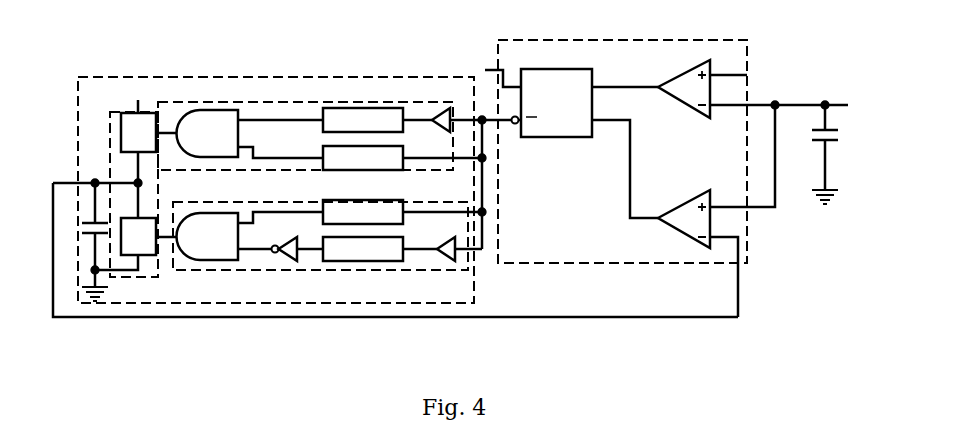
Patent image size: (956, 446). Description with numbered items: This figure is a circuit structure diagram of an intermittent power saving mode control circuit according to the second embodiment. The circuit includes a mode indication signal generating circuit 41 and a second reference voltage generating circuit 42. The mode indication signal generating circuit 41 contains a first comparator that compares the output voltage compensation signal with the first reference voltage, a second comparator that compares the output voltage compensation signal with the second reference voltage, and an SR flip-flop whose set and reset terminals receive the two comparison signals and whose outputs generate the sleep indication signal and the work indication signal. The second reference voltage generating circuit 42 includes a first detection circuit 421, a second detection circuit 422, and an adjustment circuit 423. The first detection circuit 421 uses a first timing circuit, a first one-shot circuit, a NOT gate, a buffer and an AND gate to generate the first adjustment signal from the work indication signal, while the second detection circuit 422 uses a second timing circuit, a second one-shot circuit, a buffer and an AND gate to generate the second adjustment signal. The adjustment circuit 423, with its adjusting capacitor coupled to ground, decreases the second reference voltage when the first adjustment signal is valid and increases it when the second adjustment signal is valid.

The mode indication signal generating circuit 41 is at (747, 263).
The second reference voltage generating circuit 42 is at (474, 280).
The first detection circuit 421 is at (312, 270).
The second detection circuit 422 is at (422, 170).
The adjustment circuit 423 is at (152, 277).